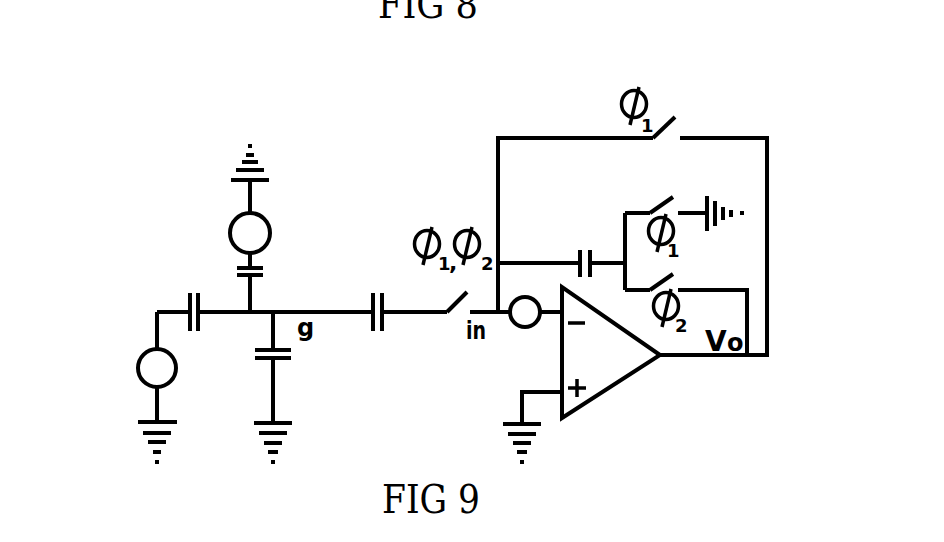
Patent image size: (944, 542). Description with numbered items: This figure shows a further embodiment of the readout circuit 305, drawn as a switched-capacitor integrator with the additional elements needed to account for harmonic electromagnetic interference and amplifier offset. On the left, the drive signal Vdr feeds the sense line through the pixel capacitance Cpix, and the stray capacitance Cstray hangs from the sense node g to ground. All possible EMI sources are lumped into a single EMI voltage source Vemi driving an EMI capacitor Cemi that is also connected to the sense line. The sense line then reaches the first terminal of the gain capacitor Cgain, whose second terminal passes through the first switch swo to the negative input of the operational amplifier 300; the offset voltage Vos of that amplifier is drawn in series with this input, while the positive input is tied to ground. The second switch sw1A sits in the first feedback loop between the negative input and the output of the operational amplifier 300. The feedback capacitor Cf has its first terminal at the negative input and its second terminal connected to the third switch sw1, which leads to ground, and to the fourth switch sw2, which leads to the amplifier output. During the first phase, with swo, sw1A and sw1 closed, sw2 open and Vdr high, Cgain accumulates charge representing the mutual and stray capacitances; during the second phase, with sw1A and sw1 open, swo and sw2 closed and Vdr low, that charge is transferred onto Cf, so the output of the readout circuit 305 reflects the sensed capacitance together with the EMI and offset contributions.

The operational amplifier 300 is at (617, 385).
The readout circuit 305 is at (742, 88).
The pixel capacitance Cpix is at (176, 296).
The EMI capacitor Cemi is at (282, 282).
The stray capacitance Cstray is at (315, 367).
The gain capacitor Cgain is at (385, 289).
The feedback capacitor Cf is at (561, 250).
The first switch swo is at (432, 296).
The third switch sw1 is at (664, 193).
The second switch sw1A is at (699, 128).
The fourth switch sw2 is at (686, 309).
The drive signal Vdr is at (128, 367).
The EMI voltage source Vemi is at (216, 216).
The offset voltage Vos is at (530, 336).